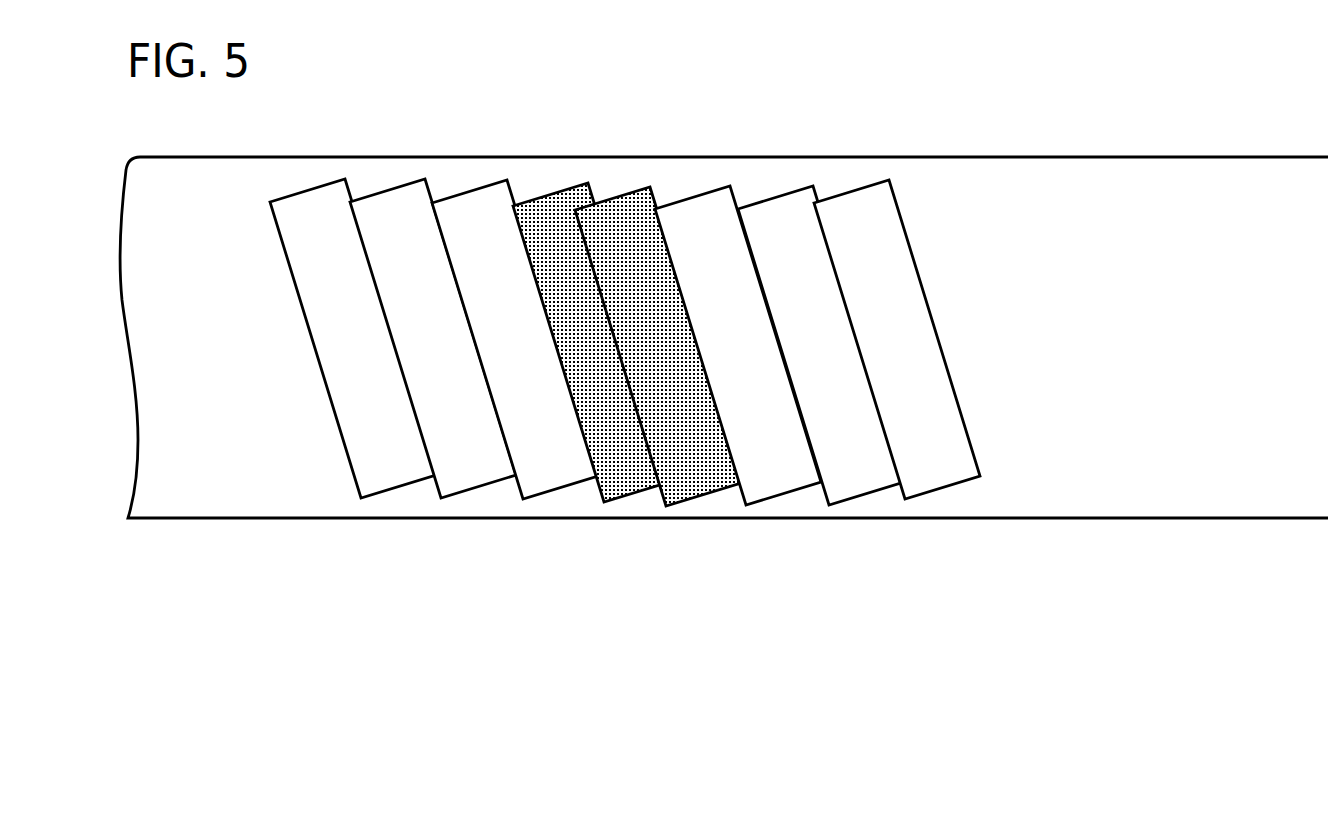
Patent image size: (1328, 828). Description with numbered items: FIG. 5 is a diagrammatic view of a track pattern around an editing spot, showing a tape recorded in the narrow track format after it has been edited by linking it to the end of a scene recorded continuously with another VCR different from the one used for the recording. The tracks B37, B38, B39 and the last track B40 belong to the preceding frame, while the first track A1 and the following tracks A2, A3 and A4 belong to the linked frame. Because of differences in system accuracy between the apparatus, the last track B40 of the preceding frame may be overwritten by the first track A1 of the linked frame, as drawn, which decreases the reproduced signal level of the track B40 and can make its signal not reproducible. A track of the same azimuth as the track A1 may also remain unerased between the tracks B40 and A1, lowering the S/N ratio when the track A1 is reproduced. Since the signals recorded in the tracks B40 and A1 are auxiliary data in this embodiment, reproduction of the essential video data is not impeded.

The recording block B37 is at (353, 338).
The recording block B38 is at (433, 338).
The recording block B39 is at (515, 339).
The last track B40 is at (596, 342).
The first track A1 is at (658, 346).
The recording block A2 is at (738, 345).
The recording block A3 is at (821, 345).
The recording block A4 is at (897, 339).